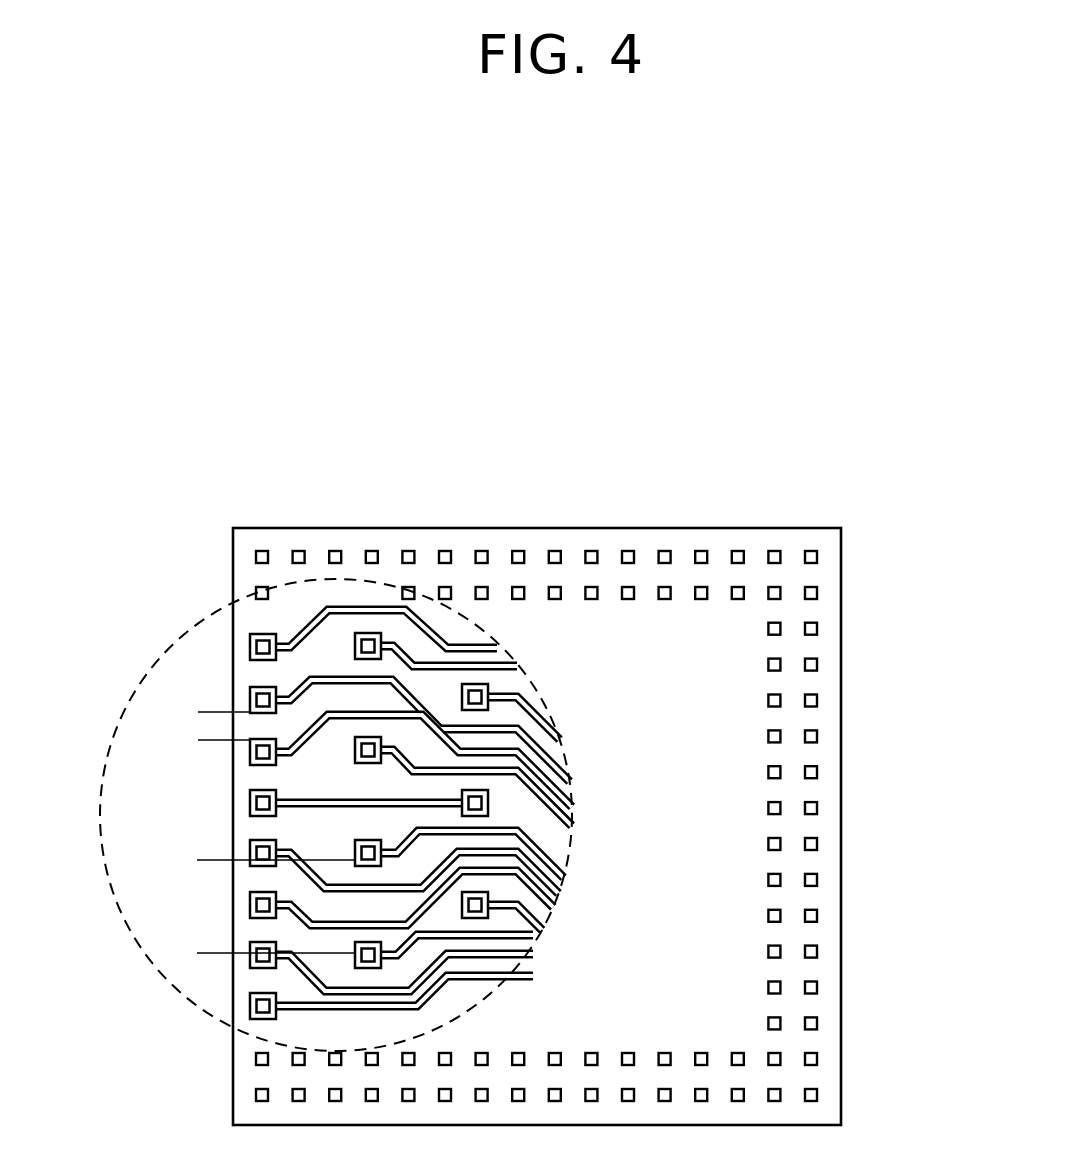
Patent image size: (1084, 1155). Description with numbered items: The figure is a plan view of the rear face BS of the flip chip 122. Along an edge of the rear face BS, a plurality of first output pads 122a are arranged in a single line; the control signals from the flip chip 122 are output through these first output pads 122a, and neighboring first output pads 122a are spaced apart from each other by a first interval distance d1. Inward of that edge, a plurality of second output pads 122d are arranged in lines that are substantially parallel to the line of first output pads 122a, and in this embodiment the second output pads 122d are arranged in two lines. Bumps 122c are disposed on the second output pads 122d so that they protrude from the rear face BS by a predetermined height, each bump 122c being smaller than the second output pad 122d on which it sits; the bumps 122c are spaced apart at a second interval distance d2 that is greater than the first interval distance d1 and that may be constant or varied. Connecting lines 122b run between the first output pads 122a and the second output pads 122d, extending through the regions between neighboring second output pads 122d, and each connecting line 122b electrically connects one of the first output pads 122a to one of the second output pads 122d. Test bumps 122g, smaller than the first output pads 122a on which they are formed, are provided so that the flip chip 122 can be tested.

The flip chip 122 is at (543, 418).
The first output pads 122a is at (252, 648).
The connecting lines 122b is at (417, 611).
The bumps 122c is at (560, 593).
The second output pads 122d is at (362, 636).
The test bumps 122g is at (250, 1004).
The rear face BS is at (735, 882).
The first interval distance d1 is at (205, 667).
The second interval distance d2 is at (206, 860).